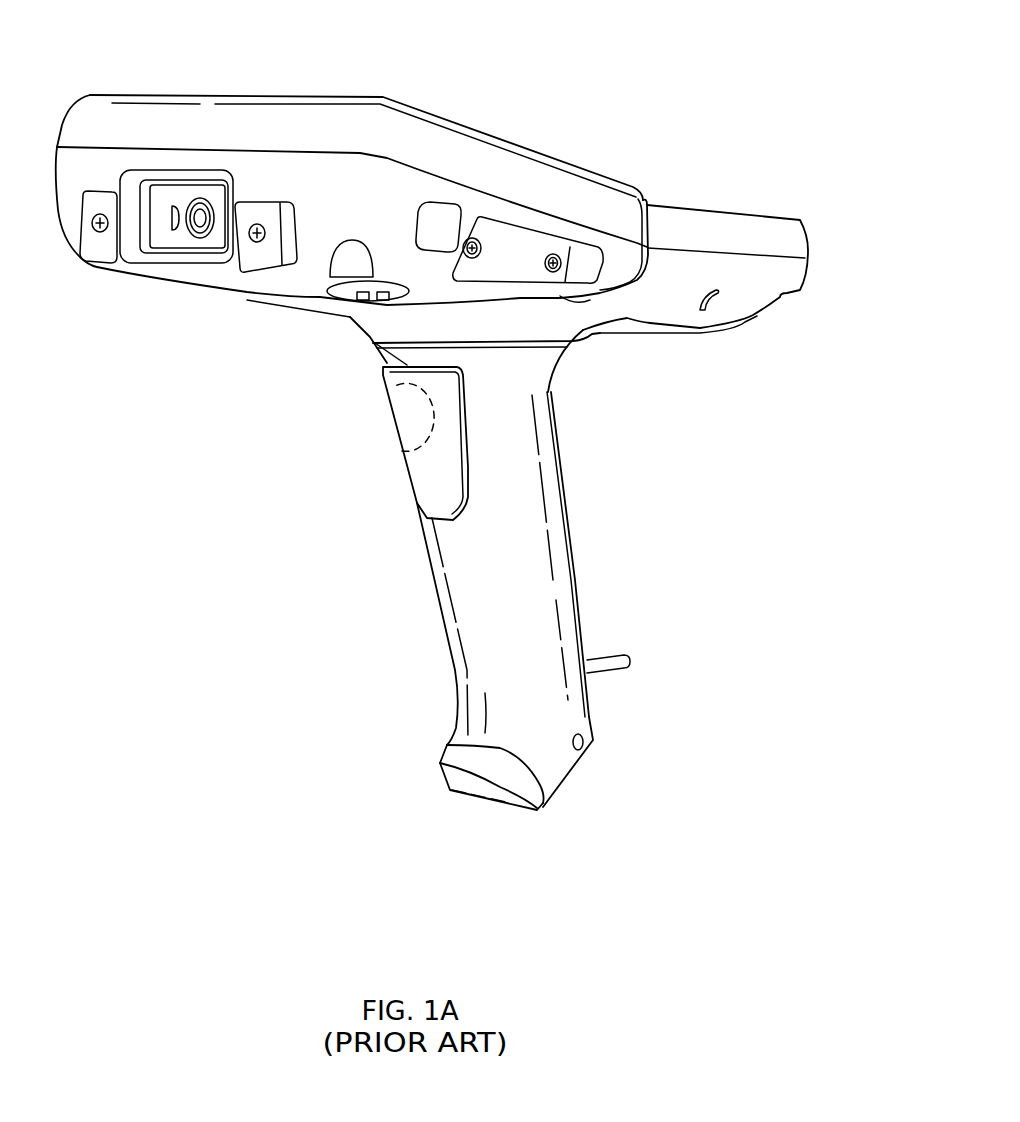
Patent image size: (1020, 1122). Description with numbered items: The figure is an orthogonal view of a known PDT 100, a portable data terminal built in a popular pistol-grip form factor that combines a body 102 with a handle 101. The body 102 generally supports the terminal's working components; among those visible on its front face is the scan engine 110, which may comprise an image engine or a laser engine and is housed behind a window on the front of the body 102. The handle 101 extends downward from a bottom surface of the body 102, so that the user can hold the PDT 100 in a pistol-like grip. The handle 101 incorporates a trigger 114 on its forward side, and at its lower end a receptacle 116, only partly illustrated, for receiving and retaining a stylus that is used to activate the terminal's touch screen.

The PDT 100 is at (613, 82).
The handle 101 is at (569, 492).
The body 102 is at (827, 242).
The scan engine 110 is at (184, 232).
The trigger 114 is at (391, 422).
The receptacle 116 is at (488, 799).